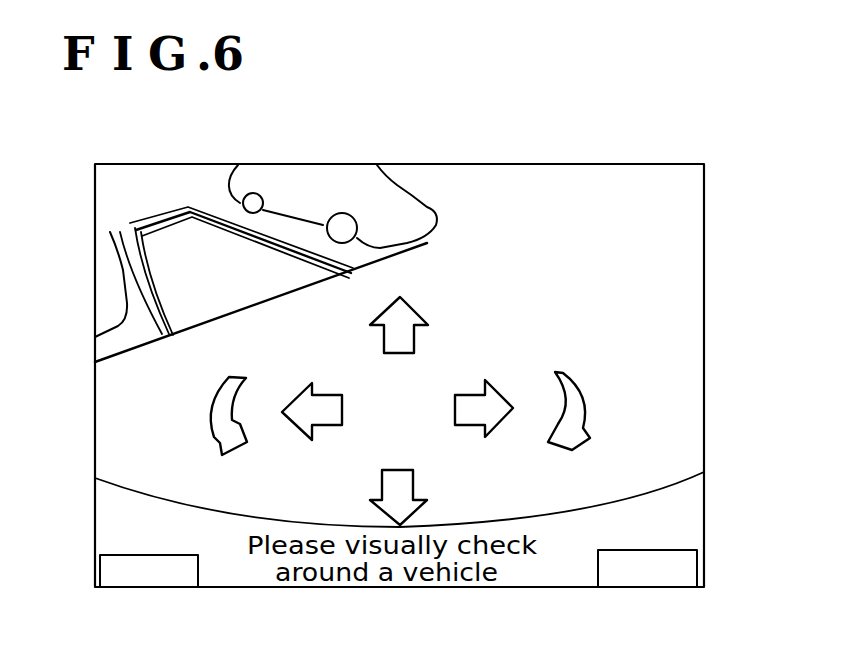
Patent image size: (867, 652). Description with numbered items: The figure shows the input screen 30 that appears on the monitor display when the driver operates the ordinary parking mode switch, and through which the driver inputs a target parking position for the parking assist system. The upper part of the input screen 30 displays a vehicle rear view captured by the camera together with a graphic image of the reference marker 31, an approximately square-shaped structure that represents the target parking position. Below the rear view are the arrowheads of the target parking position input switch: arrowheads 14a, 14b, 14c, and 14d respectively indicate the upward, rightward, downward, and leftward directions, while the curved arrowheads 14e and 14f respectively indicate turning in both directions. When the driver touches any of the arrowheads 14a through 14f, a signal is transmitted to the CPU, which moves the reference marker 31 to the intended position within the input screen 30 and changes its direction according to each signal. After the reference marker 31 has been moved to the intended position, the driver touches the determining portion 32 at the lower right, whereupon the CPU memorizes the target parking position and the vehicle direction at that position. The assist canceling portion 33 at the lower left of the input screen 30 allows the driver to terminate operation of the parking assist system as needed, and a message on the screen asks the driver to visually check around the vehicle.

The input screen 30 is at (705, 222).
The reference marker 31 is at (237, 228).
The determining portion 32 is at (647, 568).
The assist canceling portion 33 is at (149, 572).
The arrowhead 14a is at (410, 302).
The arrowhead 14b is at (470, 393).
The arrowhead 14c is at (413, 477).
The arrowhead 14d is at (328, 395).
The arrowhead 14e is at (590, 393).
The arrowhead 14f is at (230, 375).